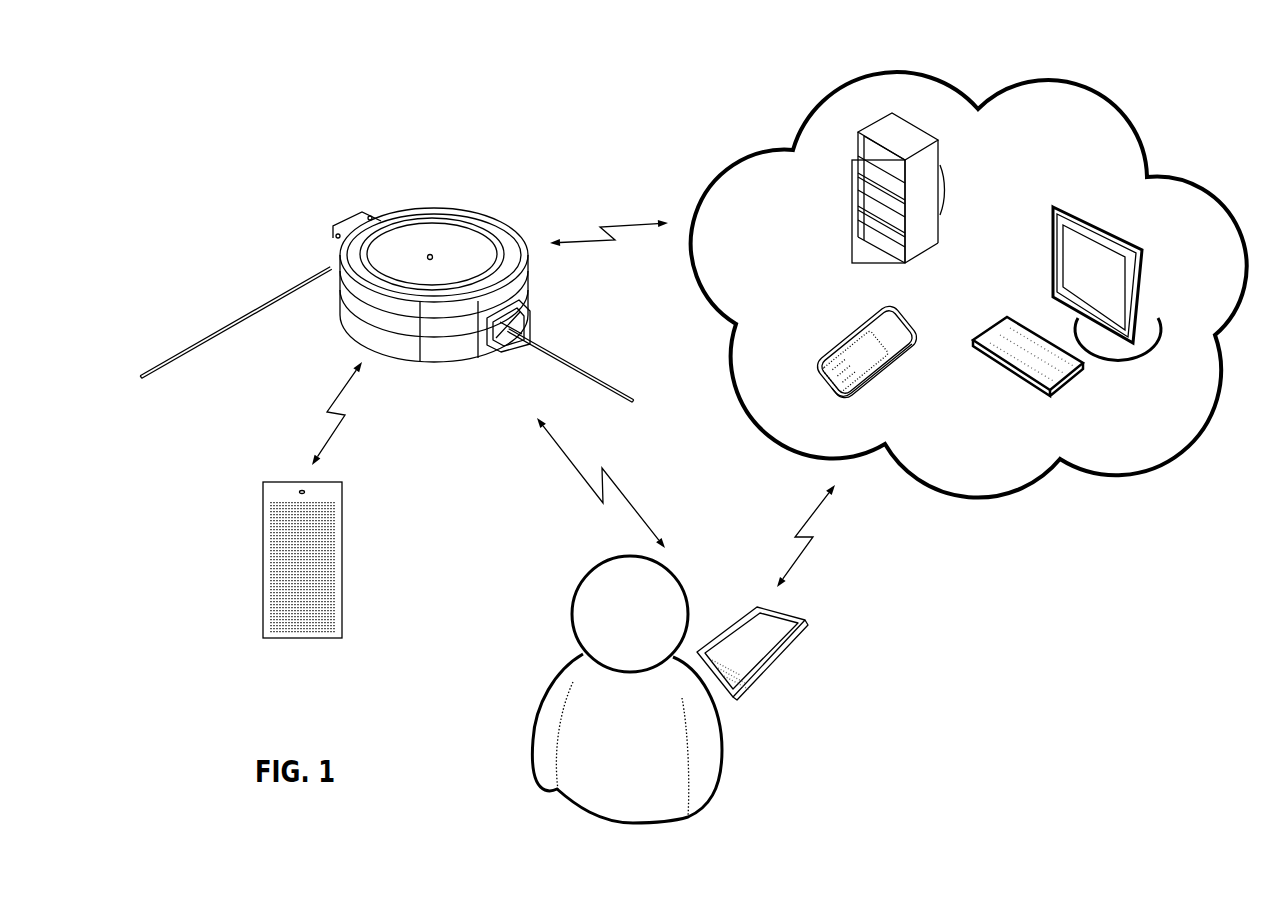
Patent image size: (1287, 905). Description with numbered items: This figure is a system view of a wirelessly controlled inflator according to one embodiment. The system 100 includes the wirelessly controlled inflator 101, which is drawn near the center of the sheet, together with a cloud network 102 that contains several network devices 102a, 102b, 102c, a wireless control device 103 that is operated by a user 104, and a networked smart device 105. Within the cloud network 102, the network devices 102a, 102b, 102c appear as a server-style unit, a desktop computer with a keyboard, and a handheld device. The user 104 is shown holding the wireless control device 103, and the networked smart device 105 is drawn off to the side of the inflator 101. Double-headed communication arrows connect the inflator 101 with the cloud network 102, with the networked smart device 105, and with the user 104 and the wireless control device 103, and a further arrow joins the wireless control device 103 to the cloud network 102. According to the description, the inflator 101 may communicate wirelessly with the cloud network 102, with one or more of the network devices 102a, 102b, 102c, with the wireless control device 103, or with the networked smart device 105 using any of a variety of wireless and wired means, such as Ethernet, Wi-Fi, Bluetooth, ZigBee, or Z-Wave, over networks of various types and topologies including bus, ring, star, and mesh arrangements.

The system 100 is at (211, 83).
The wirelessly controlled inflator 101 is at (435, 207).
The cloud network 102 is at (727, 165).
The network device 102a is at (940, 150).
The network device 102b is at (1072, 282).
The network device 102c is at (836, 346).
The wireless control device 103 is at (790, 639).
The user 104 is at (610, 745).
The networked smart device 105 is at (342, 543).